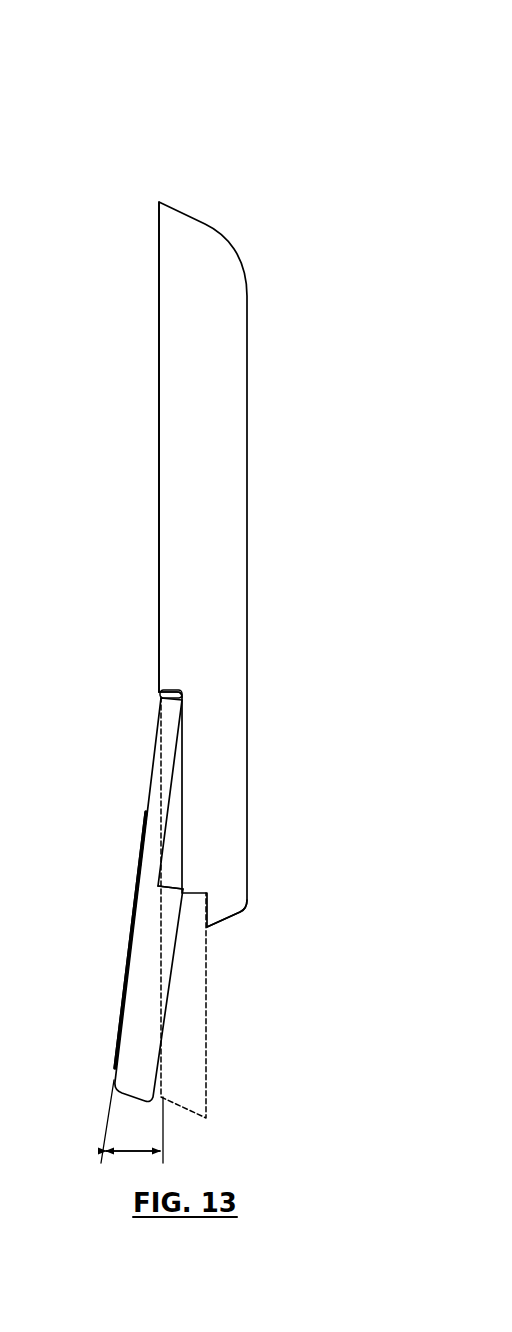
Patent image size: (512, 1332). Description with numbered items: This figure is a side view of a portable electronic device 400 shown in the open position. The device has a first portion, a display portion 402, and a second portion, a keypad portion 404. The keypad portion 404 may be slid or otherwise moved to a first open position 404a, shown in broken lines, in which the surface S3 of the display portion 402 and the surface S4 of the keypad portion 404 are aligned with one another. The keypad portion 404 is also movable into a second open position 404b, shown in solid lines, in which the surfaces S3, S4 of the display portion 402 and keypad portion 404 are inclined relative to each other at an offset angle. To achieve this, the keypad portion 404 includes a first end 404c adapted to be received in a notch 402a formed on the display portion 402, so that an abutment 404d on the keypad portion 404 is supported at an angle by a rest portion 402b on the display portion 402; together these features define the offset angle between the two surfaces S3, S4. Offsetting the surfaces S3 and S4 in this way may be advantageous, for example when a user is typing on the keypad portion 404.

The portable electronic device 400 is at (163, 131).
The display portion 402 is at (200, 221).
The notch 402a is at (163, 709).
The rest portion 402b is at (188, 885).
The keypad portion 404 is at (130, 1057).
The first open position 404a is at (205, 992).
The second open position 404b is at (140, 988).
The first end 404c is at (172, 685).
The abutment 404d is at (163, 876).
The surface of the display portion S3 is at (157, 447).
The surface of the keypad portion S4 is at (158, 962).